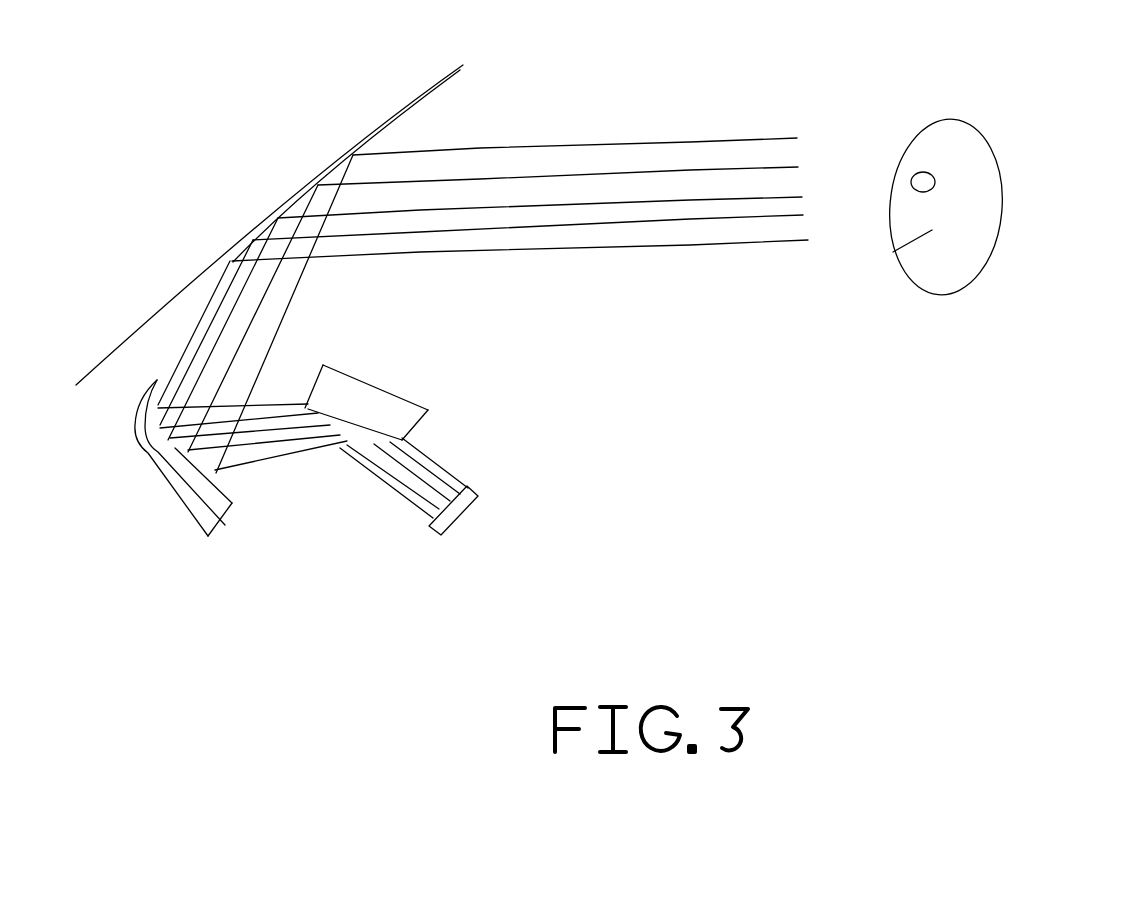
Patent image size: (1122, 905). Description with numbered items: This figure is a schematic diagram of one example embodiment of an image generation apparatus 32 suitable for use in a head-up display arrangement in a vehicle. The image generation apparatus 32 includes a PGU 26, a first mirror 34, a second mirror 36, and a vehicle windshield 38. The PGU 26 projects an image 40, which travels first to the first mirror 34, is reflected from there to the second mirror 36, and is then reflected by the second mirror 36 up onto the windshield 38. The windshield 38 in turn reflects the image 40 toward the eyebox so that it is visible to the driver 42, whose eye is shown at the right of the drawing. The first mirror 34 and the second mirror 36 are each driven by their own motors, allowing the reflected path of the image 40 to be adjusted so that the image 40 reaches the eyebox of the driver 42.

The PGU 26 is at (477, 510).
The image generation apparatus 32 is at (762, 523).
The first mirror 34 is at (428, 410).
The second mirror 36 is at (213, 527).
The vehicle windshield 38 is at (136, 342).
The image 40 is at (398, 500).
The driver 42 is at (970, 287).